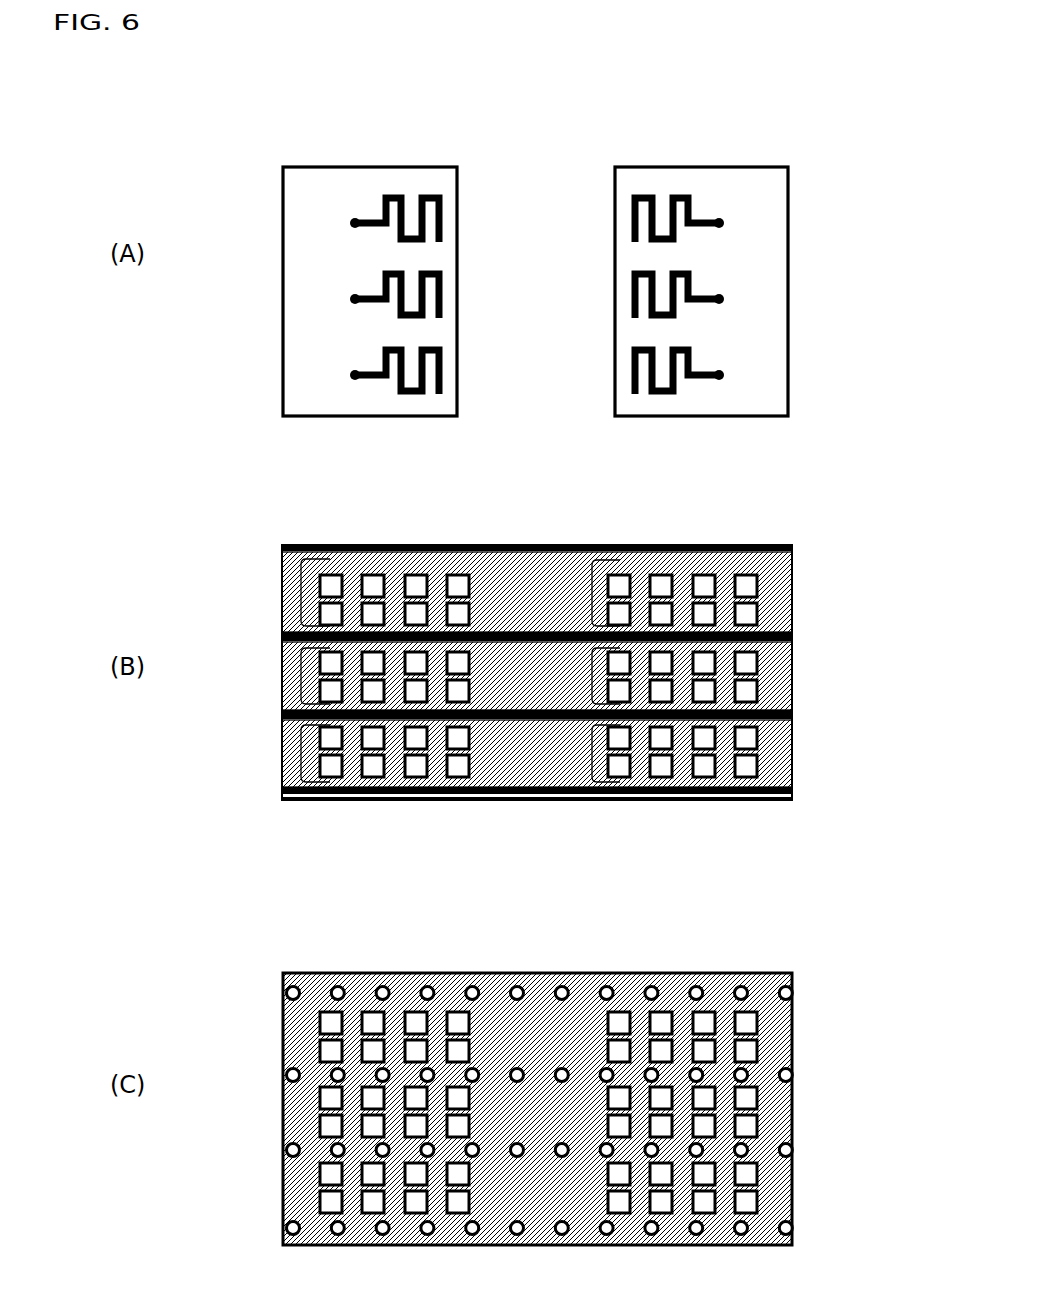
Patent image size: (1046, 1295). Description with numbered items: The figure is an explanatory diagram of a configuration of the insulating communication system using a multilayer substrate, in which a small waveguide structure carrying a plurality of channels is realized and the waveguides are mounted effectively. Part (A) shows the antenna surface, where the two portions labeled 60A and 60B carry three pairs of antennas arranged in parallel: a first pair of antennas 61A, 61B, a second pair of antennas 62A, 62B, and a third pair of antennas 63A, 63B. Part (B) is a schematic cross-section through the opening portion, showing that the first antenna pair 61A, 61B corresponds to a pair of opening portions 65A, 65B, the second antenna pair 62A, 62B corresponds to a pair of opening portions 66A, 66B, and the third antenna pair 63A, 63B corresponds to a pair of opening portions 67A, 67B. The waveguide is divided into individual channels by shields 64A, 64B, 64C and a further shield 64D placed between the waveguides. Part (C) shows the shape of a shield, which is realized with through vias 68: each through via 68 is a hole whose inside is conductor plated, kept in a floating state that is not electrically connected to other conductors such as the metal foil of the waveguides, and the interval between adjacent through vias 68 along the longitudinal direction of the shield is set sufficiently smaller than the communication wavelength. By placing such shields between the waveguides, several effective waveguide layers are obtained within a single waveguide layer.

The first substrate 60A is at (312, 178).
The second substrate 60B is at (765, 178).
The antenna 61A is at (434, 198).
The antenna 62A is at (440, 276).
The antenna 63A is at (438, 368).
The antenna 61B is at (640, 200).
The antenna 62B is at (636, 291).
The antenna 63B is at (637, 376).
The shield 64A is at (790, 547).
The shield 64B is at (793, 620).
The shield 64C is at (793, 702).
The fourth conductor layer 64D is at (793, 782).
The opening portion 65A is at (283, 603).
The opening portion 65B is at (592, 562).
The opening portion 66A is at (283, 690).
The opening portion 66B is at (590, 680).
The opening portion 67A is at (283, 757).
The opening portion 67B is at (593, 768).
The through via 68 is at (745, 975).